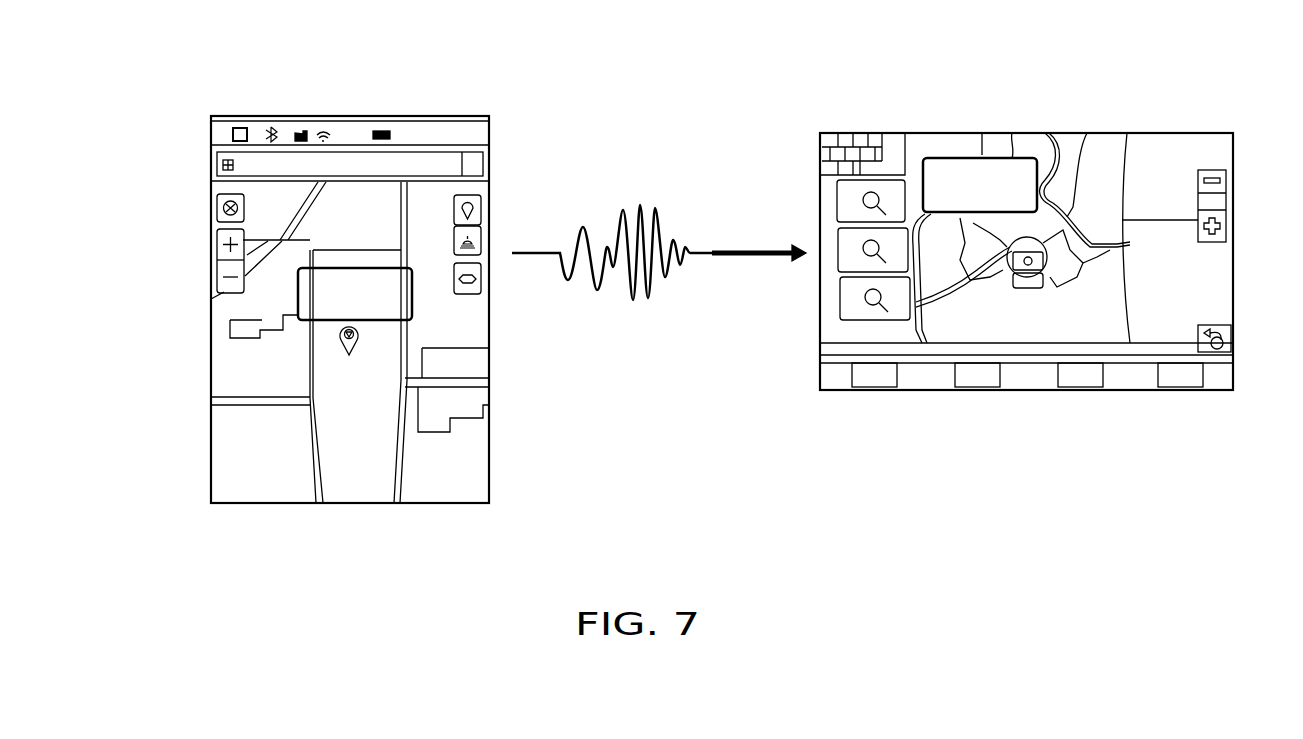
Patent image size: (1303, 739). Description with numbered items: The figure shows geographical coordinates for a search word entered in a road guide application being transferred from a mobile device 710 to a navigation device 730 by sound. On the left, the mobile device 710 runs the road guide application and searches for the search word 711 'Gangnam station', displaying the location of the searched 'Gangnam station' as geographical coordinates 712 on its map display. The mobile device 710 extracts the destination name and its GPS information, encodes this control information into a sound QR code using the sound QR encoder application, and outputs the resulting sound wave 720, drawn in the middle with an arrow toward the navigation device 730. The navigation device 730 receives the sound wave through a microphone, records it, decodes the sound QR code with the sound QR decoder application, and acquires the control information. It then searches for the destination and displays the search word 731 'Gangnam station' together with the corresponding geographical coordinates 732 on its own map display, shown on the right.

The mobile device 710 is at (418, 116).
The search word 711 is at (217, 153).
The geographical coordinates of searched location 712 is at (298, 299).
The sound wave 720 is at (640, 205).
The navigation device 730 is at (895, 133).
The search word on navigation device 731 is at (983, 133).
The geographical coordinates of destination 732 is at (1085, 133).